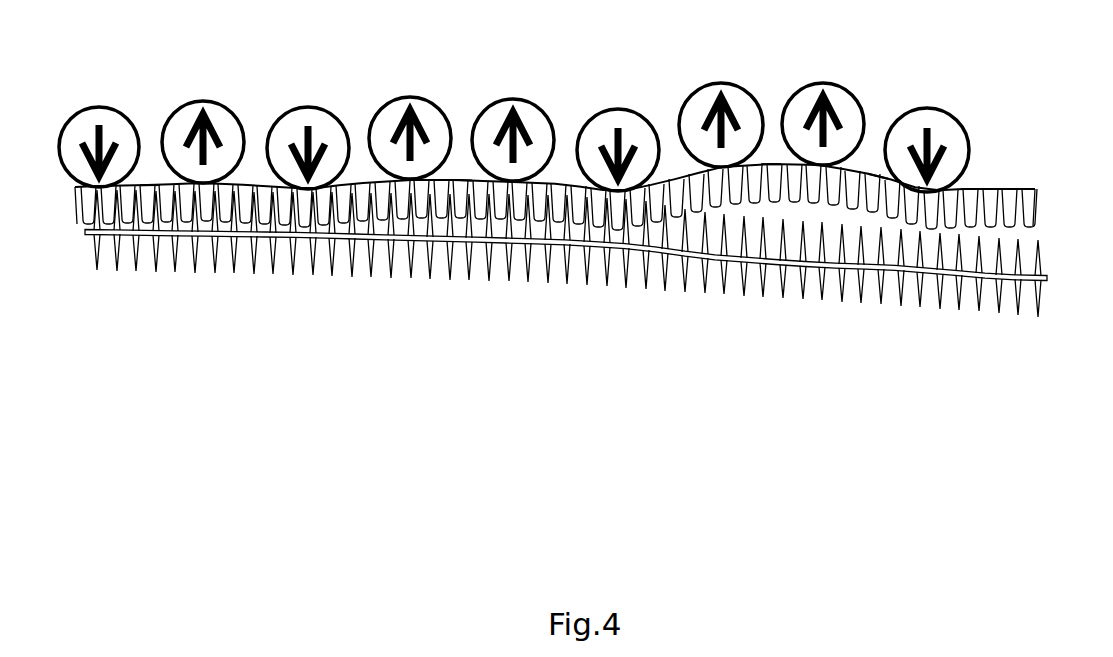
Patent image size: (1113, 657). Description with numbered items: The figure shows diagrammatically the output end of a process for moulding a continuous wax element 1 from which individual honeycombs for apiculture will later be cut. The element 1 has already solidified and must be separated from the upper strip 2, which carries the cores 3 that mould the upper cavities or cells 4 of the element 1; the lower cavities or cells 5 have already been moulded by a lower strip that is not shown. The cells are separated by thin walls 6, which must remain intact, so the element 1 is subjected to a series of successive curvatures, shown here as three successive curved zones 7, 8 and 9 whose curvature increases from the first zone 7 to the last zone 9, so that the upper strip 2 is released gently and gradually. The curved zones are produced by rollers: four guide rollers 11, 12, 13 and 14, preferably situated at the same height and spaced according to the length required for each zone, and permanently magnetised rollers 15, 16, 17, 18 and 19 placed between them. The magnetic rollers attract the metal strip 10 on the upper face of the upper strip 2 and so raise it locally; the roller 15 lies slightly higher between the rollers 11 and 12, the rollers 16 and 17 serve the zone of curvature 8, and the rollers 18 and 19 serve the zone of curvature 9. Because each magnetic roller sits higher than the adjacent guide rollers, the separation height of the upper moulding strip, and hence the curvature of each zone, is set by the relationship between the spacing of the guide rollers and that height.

The continuous element 1 is at (588, 298).
The upper strip 2 is at (993, 166).
The cores 3 is at (1028, 206).
The upper cavities or cells 4 is at (1023, 263).
The lower cavities or cells 5 is at (1023, 303).
The thin walls 6 is at (1017, 253).
The first curved zone 7 is at (150, 184).
The second curved zone 8 is at (462, 179).
The third curved zone 9 is at (771, 162).
The metal strip 10 is at (878, 181).
The first guide roller 11 is at (99, 107).
The second guide roller 12 is at (308, 107).
The third guide roller 13 is at (618, 109).
The fourth guide roller 14 is at (927, 108).
The permanently magnetised roller 15 is at (203, 101).
The permanently magnetised roller 16 is at (410, 97).
The permanently magnetised roller 17 is at (513, 99).
The permanently magnetised roller 18 is at (721, 83).
The permanently magnetised roller 19 is at (823, 83).